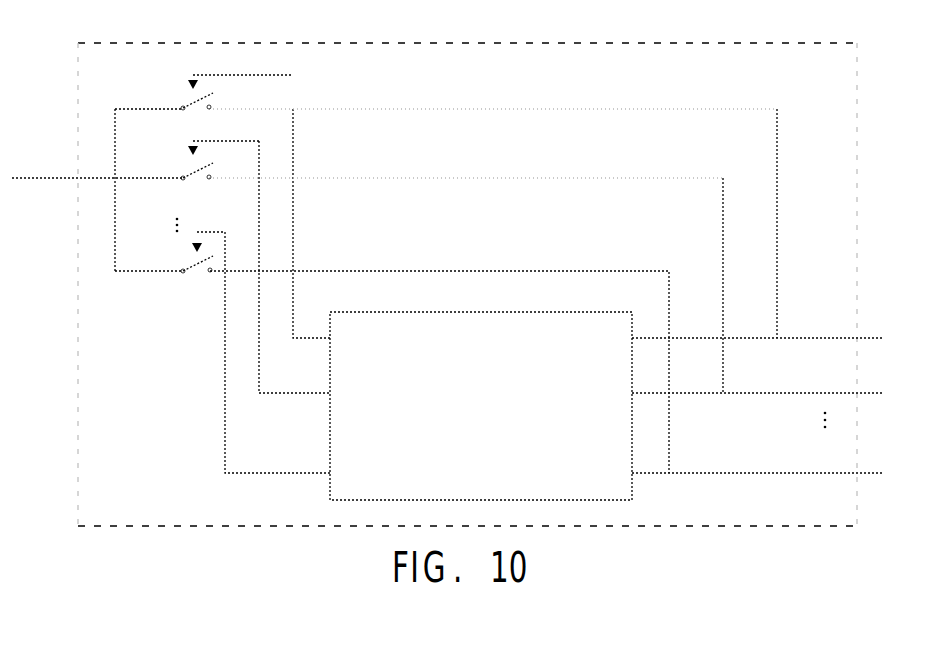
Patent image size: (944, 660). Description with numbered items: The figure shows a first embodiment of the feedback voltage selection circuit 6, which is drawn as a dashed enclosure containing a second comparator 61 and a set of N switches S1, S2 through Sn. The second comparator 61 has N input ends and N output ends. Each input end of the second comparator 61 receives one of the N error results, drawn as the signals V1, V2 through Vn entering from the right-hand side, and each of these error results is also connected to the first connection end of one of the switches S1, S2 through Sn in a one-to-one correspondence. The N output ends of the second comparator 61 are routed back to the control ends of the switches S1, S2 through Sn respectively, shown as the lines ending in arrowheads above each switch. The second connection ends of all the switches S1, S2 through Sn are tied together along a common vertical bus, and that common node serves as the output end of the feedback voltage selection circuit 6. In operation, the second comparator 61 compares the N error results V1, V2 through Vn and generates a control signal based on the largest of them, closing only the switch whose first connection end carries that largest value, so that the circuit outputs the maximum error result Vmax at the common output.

The feedback voltage selection circuit 6 is at (447, 263).
The second comparator 61 is at (482, 312).
The first switch S1 is at (479, 206).
The second switch S2 is at (220, 174).
The n-th switch Sn is at (422, 345).
The first error result input V1 is at (757, 325).
The second error result input V2 is at (757, 380).
The n-th error result input Vn is at (757, 443).
The maximum error result Vmax is at (367, 269).